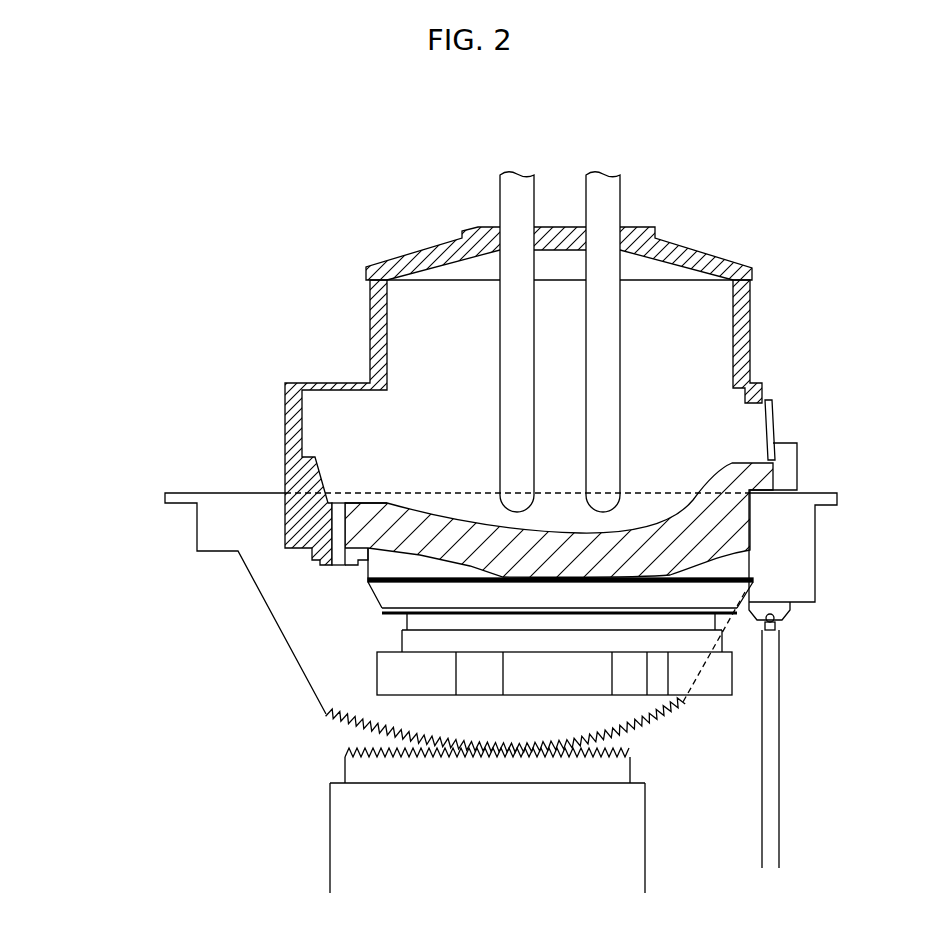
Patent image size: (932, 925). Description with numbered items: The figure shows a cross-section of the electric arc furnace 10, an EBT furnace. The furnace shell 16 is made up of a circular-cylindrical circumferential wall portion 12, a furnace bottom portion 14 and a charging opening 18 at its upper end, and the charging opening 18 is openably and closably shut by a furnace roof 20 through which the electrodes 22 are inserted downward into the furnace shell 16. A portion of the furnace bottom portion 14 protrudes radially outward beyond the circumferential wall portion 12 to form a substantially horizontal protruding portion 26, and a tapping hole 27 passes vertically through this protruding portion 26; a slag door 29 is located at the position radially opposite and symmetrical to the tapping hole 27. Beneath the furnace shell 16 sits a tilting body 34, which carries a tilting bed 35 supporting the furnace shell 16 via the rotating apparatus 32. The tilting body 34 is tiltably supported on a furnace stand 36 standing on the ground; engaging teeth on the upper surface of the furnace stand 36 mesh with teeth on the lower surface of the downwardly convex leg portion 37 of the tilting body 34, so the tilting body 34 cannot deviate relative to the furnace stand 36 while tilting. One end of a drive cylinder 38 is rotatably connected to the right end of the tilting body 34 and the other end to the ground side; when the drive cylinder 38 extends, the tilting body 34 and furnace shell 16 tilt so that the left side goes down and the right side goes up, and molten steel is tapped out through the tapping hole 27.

The electric arc furnace 10 is at (777, 235).
The circumferential wall portion 12 is at (740, 360).
The furnace bottom portion 14 is at (725, 529).
The furnace shell 16 is at (753, 317).
The charging opening 18 is at (410, 270).
The furnace roof 20 is at (688, 258).
The electrodes 22 is at (507, 208).
The protruding portion 26 is at (367, 503).
The tapping hole 27 is at (332, 567).
The slag door 29 is at (743, 480).
The rotating apparatus 32 is at (628, 655).
The tilting body 34 is at (207, 485).
The tilting bed 35 is at (417, 650).
The furnace stand 36 is at (350, 832).
The leg portion 37 is at (287, 592).
The drive cylinder 38 is at (773, 718).